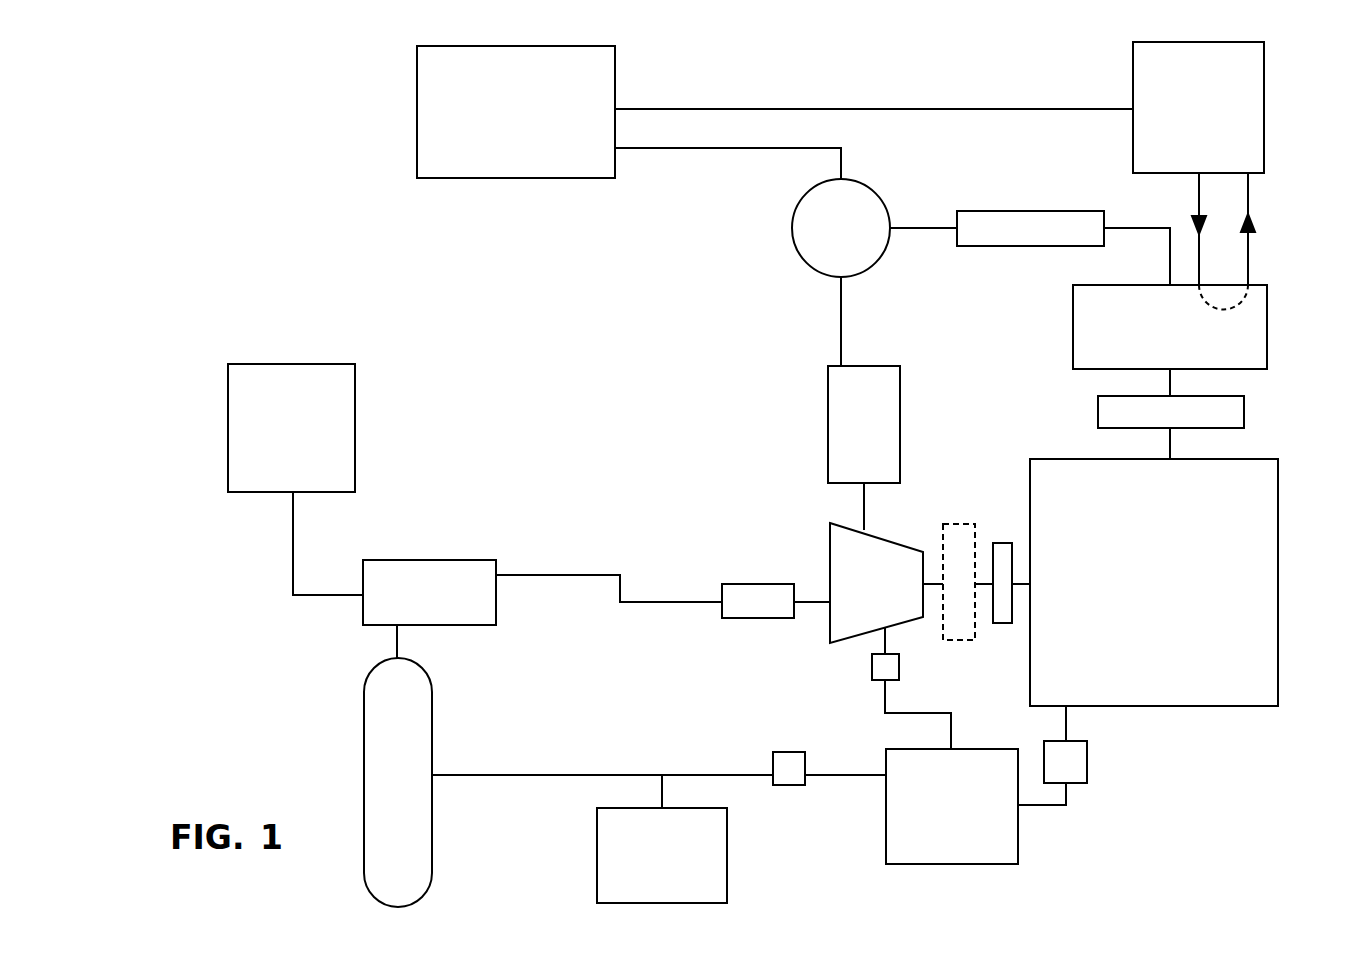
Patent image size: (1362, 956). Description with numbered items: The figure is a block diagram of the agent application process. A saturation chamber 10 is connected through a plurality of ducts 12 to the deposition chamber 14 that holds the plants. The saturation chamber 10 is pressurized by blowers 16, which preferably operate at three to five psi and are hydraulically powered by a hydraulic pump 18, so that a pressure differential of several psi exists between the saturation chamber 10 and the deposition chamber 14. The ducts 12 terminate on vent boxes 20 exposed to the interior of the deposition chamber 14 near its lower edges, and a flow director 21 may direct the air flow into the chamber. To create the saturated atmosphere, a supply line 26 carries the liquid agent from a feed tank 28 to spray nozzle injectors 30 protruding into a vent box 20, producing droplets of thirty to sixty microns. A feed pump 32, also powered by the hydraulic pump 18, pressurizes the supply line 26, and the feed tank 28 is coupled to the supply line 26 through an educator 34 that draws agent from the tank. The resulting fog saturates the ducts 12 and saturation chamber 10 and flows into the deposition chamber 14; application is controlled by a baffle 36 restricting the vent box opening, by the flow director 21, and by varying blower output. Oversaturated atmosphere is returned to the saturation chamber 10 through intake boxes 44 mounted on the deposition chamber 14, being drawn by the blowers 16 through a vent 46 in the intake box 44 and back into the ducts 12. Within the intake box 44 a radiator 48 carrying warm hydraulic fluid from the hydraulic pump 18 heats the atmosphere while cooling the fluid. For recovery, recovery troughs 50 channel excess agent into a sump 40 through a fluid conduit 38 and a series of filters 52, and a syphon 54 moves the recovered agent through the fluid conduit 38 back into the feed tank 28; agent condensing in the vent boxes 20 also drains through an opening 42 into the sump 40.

The saturation chamber 10 is at (820, 518).
The ducts 12 is at (1015, 211).
The deposition chamber 14 is at (1278, 543).
The blowers 16 is at (871, 174).
The hydraulic pump 18 is at (547, 178).
The vent boxes 20 is at (828, 557).
The flow director 21 is at (1003, 623).
The supply line 26 is at (553, 575).
The feed tank 28 is at (430, 843).
The spray nozzle injectors 30 is at (750, 618).
The feed pump 32 is at (228, 428).
The educator 34 is at (410, 560).
The baffle 36 is at (960, 524).
The fluid conduit 38 is at (690, 775).
The sump 40 is at (1018, 832).
The opening 42 is at (872, 668).
The intake boxes 44 is at (1267, 330).
The vent 46 is at (1244, 414).
The radiator 48 is at (1264, 112).
The recovery troughs 50 is at (1087, 765).
The filters 52 is at (786, 752).
The syphon 54 is at (727, 852).